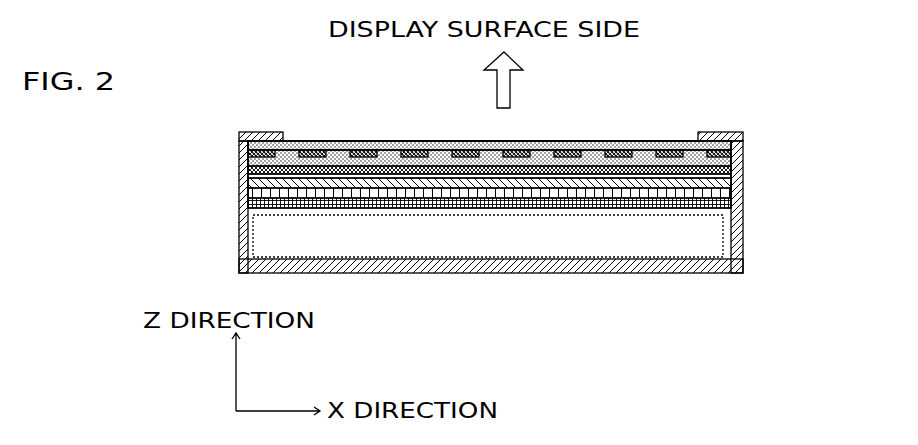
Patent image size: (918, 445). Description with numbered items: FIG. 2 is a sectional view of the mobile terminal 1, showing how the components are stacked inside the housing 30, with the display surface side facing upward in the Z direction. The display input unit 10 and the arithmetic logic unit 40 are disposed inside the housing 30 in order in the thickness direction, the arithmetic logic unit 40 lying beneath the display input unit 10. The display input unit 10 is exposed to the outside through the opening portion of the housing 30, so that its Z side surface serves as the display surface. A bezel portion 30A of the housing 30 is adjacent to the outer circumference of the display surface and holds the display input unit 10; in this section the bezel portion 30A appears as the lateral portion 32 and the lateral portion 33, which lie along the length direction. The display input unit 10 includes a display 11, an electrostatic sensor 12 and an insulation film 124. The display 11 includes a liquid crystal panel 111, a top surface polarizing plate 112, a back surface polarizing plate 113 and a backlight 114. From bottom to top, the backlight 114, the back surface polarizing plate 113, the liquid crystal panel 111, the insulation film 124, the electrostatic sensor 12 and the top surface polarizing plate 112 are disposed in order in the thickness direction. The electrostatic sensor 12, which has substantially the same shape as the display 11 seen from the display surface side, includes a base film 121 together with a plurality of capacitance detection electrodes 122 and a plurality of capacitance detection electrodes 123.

The display device 1 is at (766, 65).
The display input unit 10 is at (683, 135).
The display 11 is at (183, 148).
The liquid crystal panel 111 is at (250, 178).
The top surface polarizing plate 112 is at (276, 145).
The back surface polarizing plate 113 is at (252, 193).
The backlight 114 is at (256, 203).
The electrostatic sensor 12 is at (809, 117).
The base film 121 is at (736, 154).
The capacitance detection electrodes 122 is at (736, 146).
The capacitance detection electrodes 123 is at (736, 170).
The insulation film 124 is at (743, 174).
The housing 30 is at (743, 257).
The bezel portion 30A is at (338, 85).
The lateral portion 32 is at (270, 124).
The lateral portion 33 is at (730, 124).
The arithmetic logic unit 40 is at (612, 245).